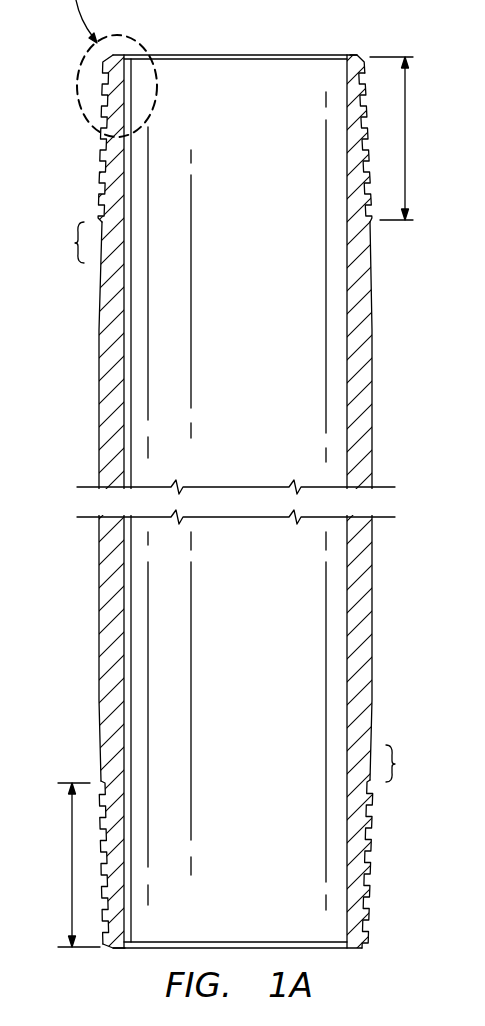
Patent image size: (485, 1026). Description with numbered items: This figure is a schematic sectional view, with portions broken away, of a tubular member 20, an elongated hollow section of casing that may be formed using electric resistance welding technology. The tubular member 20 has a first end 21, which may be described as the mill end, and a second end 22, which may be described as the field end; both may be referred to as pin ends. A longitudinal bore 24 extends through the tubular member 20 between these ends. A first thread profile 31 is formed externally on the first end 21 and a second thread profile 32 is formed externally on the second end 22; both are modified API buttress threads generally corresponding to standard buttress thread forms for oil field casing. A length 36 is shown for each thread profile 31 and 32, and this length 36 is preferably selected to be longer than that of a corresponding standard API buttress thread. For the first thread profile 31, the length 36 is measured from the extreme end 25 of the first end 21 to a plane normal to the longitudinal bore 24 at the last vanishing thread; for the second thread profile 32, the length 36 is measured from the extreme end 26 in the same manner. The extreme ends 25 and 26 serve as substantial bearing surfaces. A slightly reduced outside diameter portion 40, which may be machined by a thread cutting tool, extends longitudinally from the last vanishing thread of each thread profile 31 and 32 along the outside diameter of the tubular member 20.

The tubular member 20 is at (99, 324).
The first end 21 is at (365, 47).
The second end 22 is at (369, 952).
The longitudinal bore 24 is at (252, 318).
The extreme end 25 is at (358, 54).
The extreme end 26 is at (115, 950).
The first thread profile 31 is at (100, 166).
The second thread profile 32 is at (373, 870).
The length 36 is at (405, 129).
The reduced outside diameter portion 40 is at (235, 502).